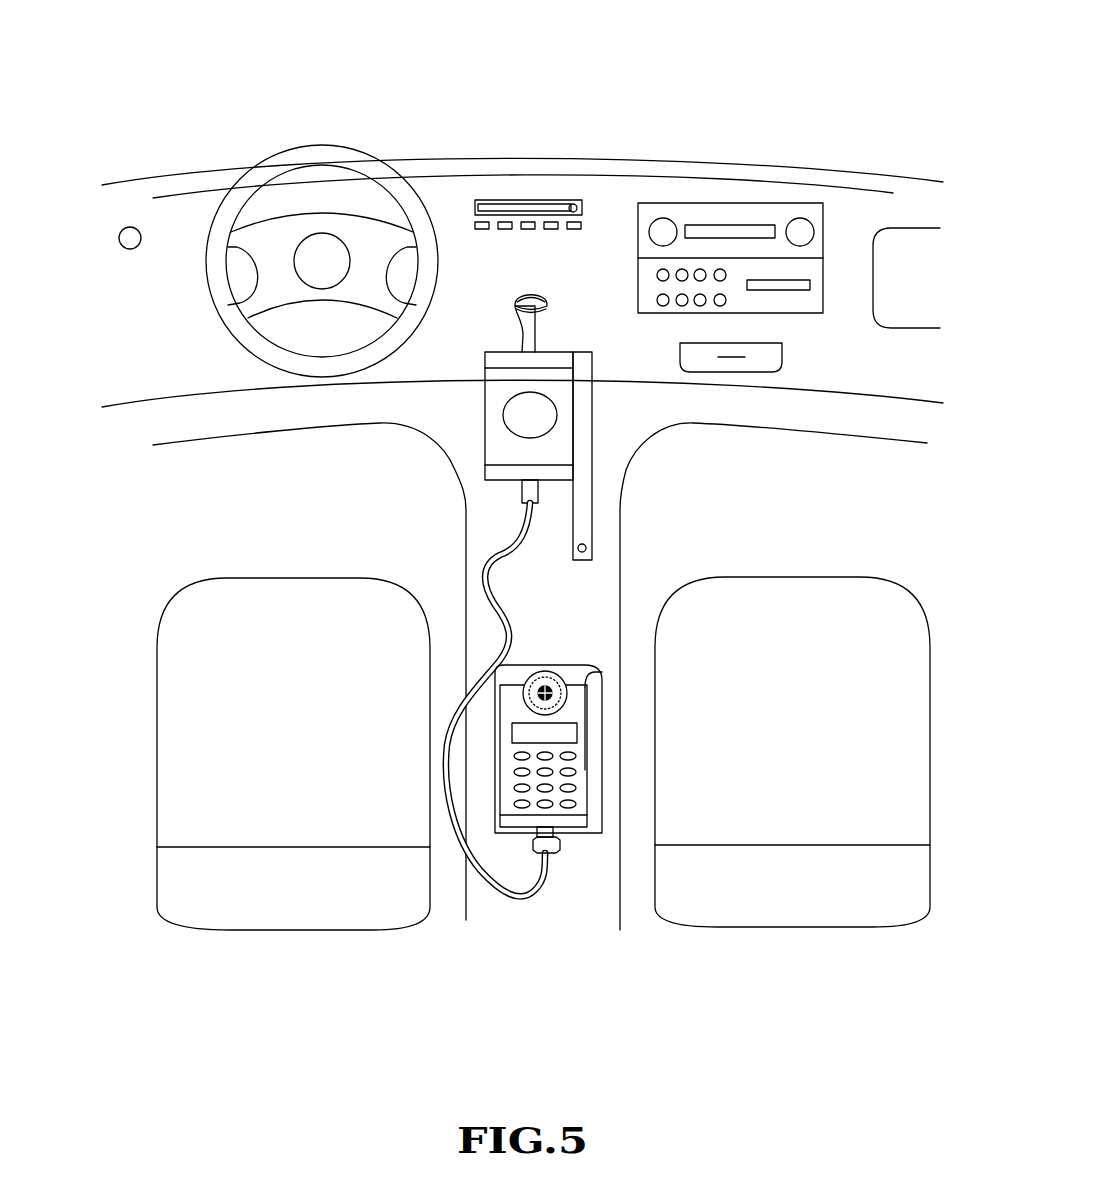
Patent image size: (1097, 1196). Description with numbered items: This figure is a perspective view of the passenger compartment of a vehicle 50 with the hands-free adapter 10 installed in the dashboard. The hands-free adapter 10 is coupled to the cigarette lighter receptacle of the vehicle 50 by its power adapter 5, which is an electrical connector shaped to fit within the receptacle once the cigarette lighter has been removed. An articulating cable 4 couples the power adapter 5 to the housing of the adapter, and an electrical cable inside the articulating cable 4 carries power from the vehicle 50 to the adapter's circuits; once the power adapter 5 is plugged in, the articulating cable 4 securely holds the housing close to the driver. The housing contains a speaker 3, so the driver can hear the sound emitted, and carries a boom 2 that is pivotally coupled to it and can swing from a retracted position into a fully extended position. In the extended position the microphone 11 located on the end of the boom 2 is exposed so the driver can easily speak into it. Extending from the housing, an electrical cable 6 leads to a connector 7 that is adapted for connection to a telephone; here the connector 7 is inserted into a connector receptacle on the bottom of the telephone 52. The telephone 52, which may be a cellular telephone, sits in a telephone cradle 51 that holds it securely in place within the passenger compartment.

The vehicle 50 is at (802, 67).
The hands-free adapter 10 is at (568, 307).
The boom 2 is at (588, 488).
The speaker 3 is at (510, 415).
The articulating cable 4 is at (522, 337).
The power adapter 5 is at (520, 296).
The electrical cable 6 is at (512, 617).
The connector 7 is at (557, 853).
The microphone 11 is at (577, 550).
The telephone cradle 51 is at (567, 662).
The telephone 52 is at (583, 797).